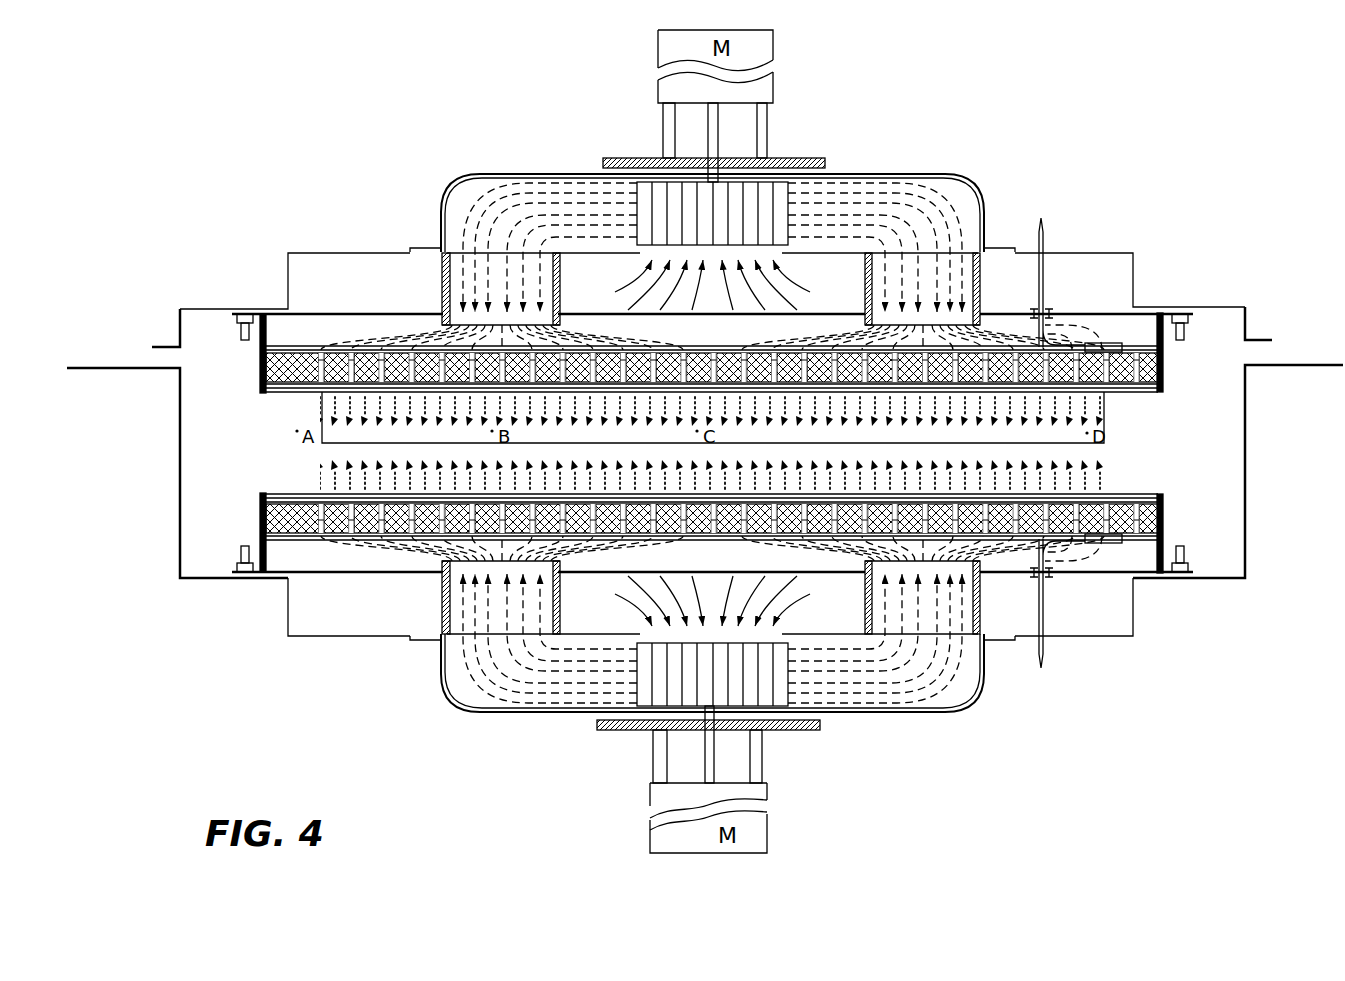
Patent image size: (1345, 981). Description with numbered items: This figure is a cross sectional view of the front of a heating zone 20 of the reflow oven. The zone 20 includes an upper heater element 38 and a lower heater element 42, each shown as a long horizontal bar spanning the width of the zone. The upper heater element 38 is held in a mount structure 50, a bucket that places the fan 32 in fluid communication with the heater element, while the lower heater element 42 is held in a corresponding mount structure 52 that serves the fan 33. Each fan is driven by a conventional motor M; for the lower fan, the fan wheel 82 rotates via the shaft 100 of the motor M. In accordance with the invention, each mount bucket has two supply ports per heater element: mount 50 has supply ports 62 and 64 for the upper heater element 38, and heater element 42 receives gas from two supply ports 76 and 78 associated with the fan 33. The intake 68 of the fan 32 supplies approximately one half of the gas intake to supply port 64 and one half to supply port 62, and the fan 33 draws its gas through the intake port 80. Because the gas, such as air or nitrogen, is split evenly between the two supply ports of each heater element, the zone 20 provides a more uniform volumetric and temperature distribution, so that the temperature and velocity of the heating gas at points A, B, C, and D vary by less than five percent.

The zone 20 is at (136, 295).
The fan 32 is at (978, 192).
The fan 33 is at (957, 708).
The upper heater element 38 is at (262, 370).
The lower heater element 42 is at (262, 518).
The mount structure 50 is at (287, 283).
The mount structure 52 is at (287, 617).
The supply port 62 is at (977, 282).
The supply port 64 is at (556, 282).
The intake 68 is at (641, 218).
The supply port 76 is at (443, 605).
The supply port 78 is at (977, 608).
The intake port 80 is at (775, 633).
The fan wheel 82 is at (640, 676).
The shaft 100 is at (710, 748).